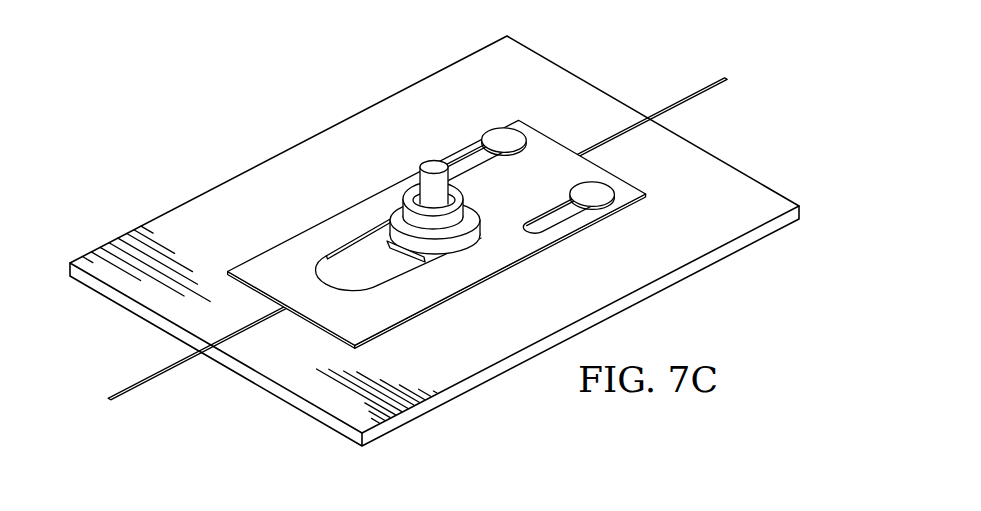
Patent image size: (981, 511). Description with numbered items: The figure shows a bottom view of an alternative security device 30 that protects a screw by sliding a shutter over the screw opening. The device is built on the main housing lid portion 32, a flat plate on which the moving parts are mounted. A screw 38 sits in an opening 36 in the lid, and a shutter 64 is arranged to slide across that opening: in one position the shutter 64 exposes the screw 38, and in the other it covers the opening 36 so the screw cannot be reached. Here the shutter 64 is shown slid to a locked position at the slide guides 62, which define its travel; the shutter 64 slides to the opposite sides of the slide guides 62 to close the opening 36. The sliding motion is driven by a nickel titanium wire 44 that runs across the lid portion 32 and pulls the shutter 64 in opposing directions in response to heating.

The security device 30 is at (262, 262).
The main housing lid portion 32 is at (302, 156).
The opening 36 is at (450, 198).
The screw 38 is at (429, 162).
The nickel titanium wire 44 is at (704, 91).
The slide guides 62 is at (493, 137).
The shutter 64 is at (467, 275).